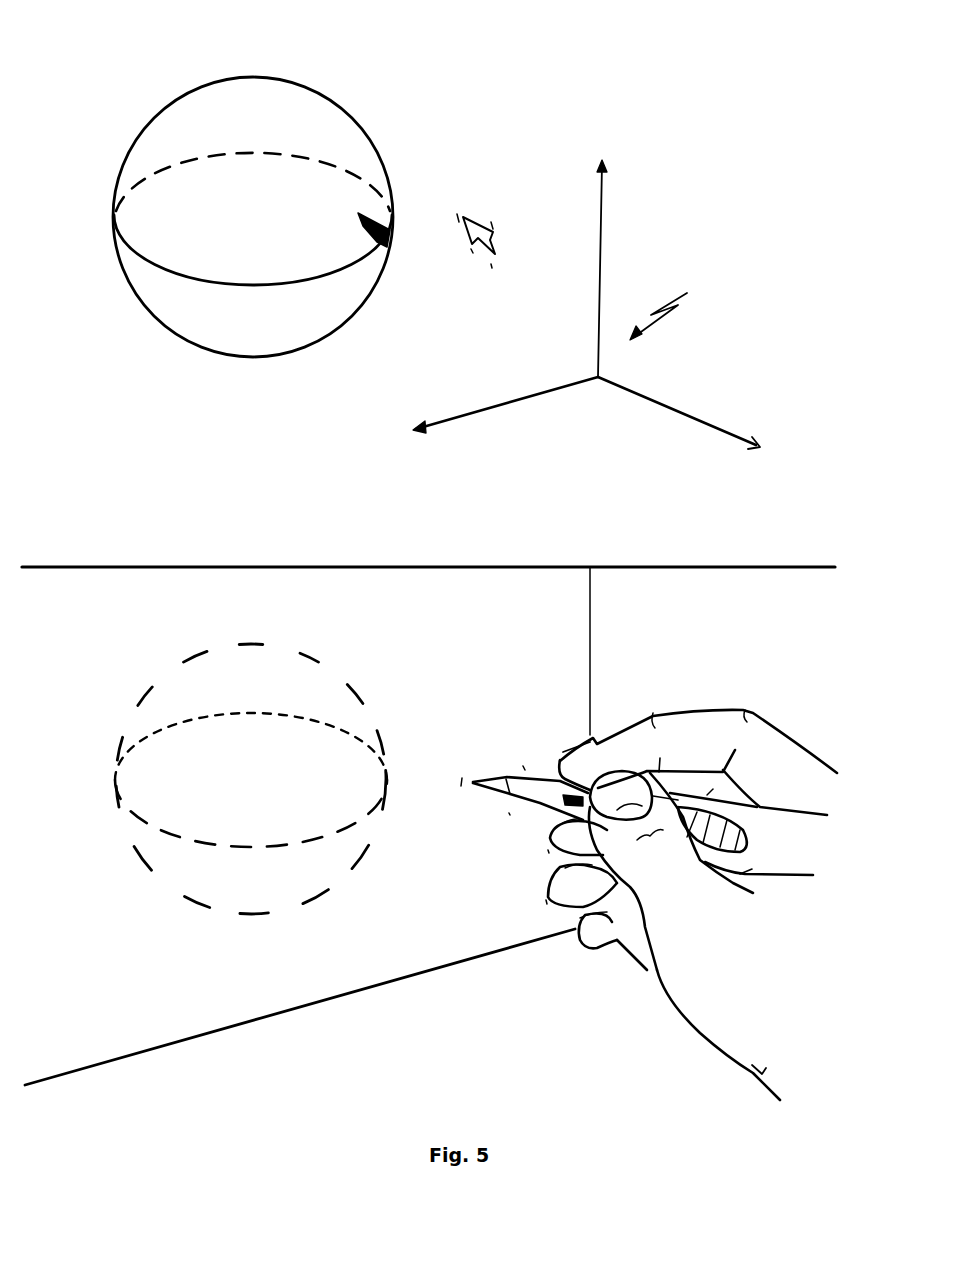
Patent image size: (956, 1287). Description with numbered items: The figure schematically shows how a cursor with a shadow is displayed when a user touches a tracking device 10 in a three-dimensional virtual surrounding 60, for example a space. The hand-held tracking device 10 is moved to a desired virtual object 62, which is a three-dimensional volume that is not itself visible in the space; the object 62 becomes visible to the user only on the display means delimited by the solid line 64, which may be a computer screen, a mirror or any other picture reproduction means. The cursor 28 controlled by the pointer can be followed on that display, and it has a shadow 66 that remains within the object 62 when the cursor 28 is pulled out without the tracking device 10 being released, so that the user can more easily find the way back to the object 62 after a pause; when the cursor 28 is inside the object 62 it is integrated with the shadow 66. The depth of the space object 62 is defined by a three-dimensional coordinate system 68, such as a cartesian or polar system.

The tracking device 10 is at (532, 773).
The cursor 28 is at (477, 216).
The three-dimensional virtual surrounding 60 is at (272, 1075).
The virtual object 62 is at (337, 107).
The solid line delimiting the display means 64 is at (195, 567).
The shadow 66 is at (357, 233).
The coordinate system 68 is at (586, 304).